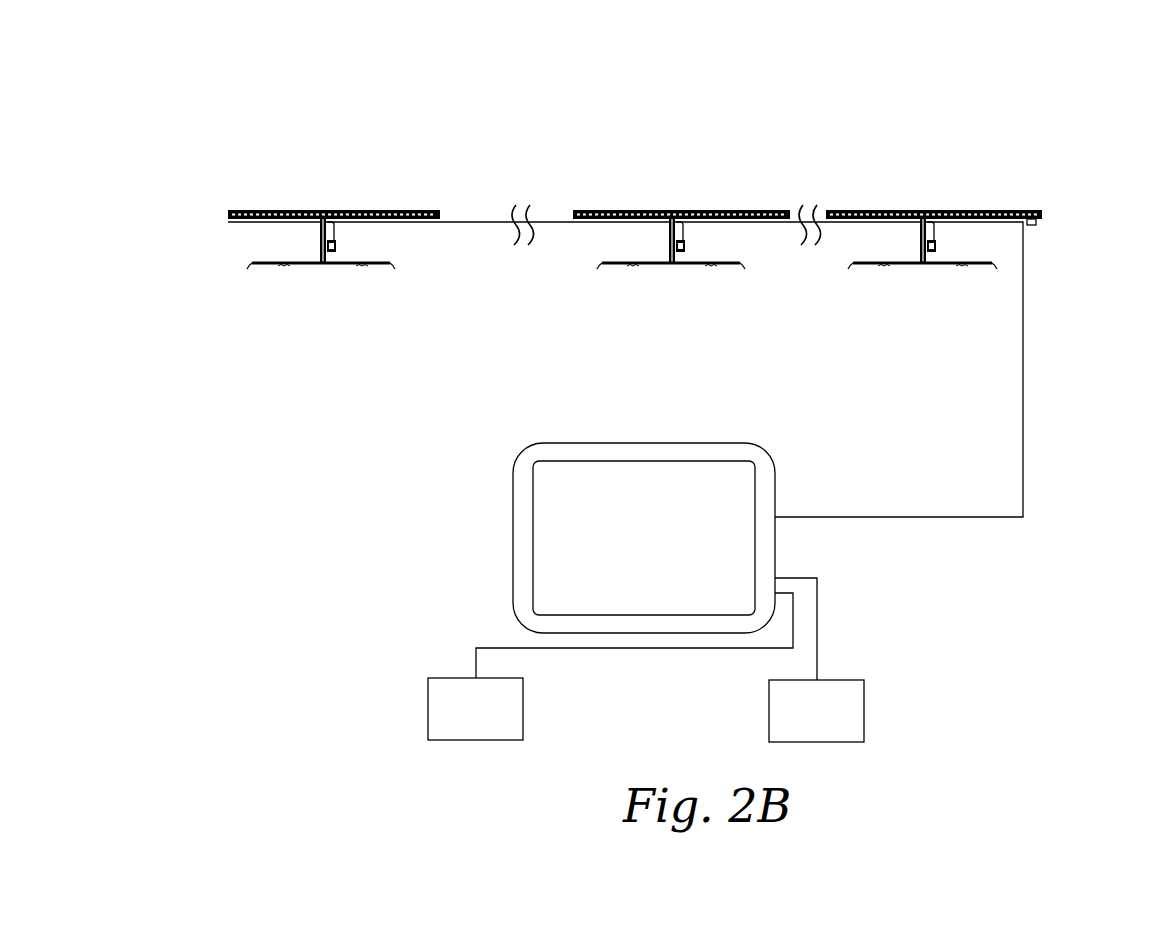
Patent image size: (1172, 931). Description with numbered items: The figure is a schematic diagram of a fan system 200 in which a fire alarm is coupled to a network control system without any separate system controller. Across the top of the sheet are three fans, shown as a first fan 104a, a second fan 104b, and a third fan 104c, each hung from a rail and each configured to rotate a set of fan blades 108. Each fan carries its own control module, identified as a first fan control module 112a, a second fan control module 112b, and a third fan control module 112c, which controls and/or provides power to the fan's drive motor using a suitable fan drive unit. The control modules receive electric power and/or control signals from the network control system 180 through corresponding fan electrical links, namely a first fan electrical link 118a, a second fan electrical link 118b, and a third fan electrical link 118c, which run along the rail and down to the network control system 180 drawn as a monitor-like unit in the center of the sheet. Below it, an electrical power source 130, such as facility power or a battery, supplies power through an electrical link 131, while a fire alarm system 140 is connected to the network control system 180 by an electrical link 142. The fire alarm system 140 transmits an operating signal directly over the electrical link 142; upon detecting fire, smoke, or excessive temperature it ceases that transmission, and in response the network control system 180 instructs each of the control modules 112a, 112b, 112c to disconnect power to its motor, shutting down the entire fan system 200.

The fan system 200 is at (266, 135).
The first fan 104a is at (934, 151).
The second fan 104b is at (681, 151).
The third fan 104c is at (334, 151).
The first fan control module 112a is at (937, 247).
The second fan control module 112b is at (686, 247).
The third fan control module 112c is at (337, 247).
The fan blades 108 is at (338, 265).
The first fan electrical link 118a is at (1023, 383).
The second fan electrical link 118b is at (787, 232).
The third fan electrical link 118c is at (462, 232).
The network control system 180 is at (496, 518).
The electrical link 131 is at (817, 625).
The electrical power source 130 is at (864, 710).
The fire alarm system 140 is at (428, 710).
The electrical link 142 is at (635, 648).